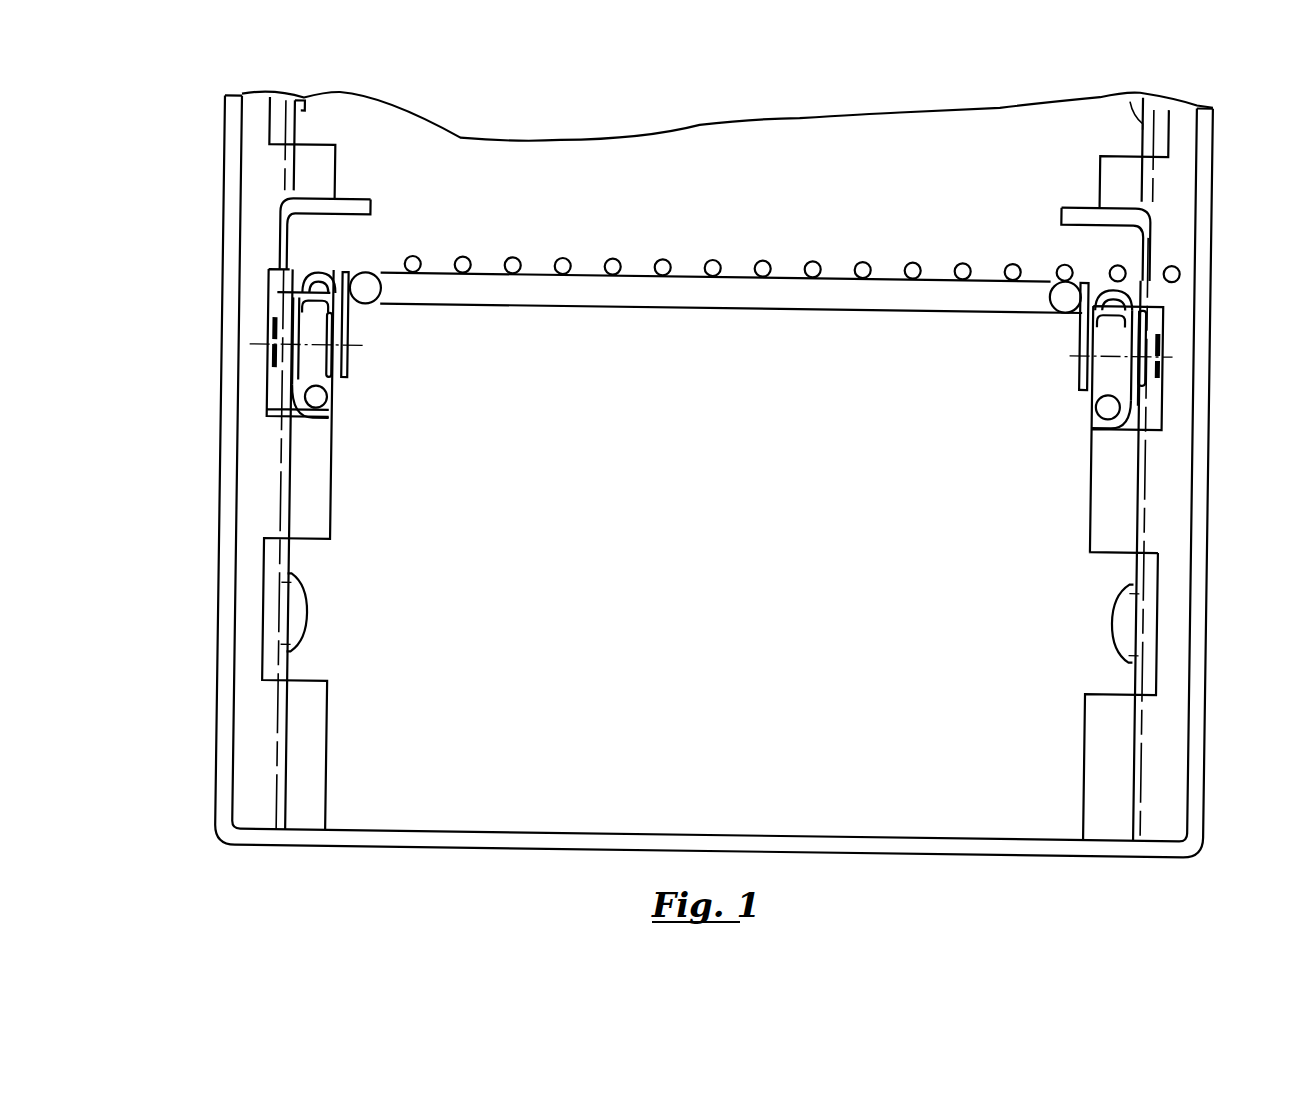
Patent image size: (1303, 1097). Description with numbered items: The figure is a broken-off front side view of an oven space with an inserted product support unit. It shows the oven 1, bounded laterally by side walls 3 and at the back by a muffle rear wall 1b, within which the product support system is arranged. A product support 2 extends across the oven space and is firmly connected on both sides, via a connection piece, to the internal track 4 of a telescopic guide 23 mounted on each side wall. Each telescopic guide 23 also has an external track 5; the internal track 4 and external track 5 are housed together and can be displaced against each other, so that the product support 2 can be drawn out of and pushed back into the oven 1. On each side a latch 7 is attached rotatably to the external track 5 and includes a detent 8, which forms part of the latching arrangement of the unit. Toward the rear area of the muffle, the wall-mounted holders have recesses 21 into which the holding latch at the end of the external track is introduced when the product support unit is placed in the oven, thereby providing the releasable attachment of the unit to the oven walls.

The oven 1 is at (1005, 571).
The muffle rear wall 1b is at (682, 527).
The product support 2 is at (728, 297).
The side walls 3 is at (225, 507).
The internal track 4 is at (326, 390).
The external track 5 is at (329, 413).
The latch 7 is at (365, 203).
The detent 8 is at (322, 250).
The recesses 21 is at (305, 618).
The telescopic guide 23 is at (320, 337).